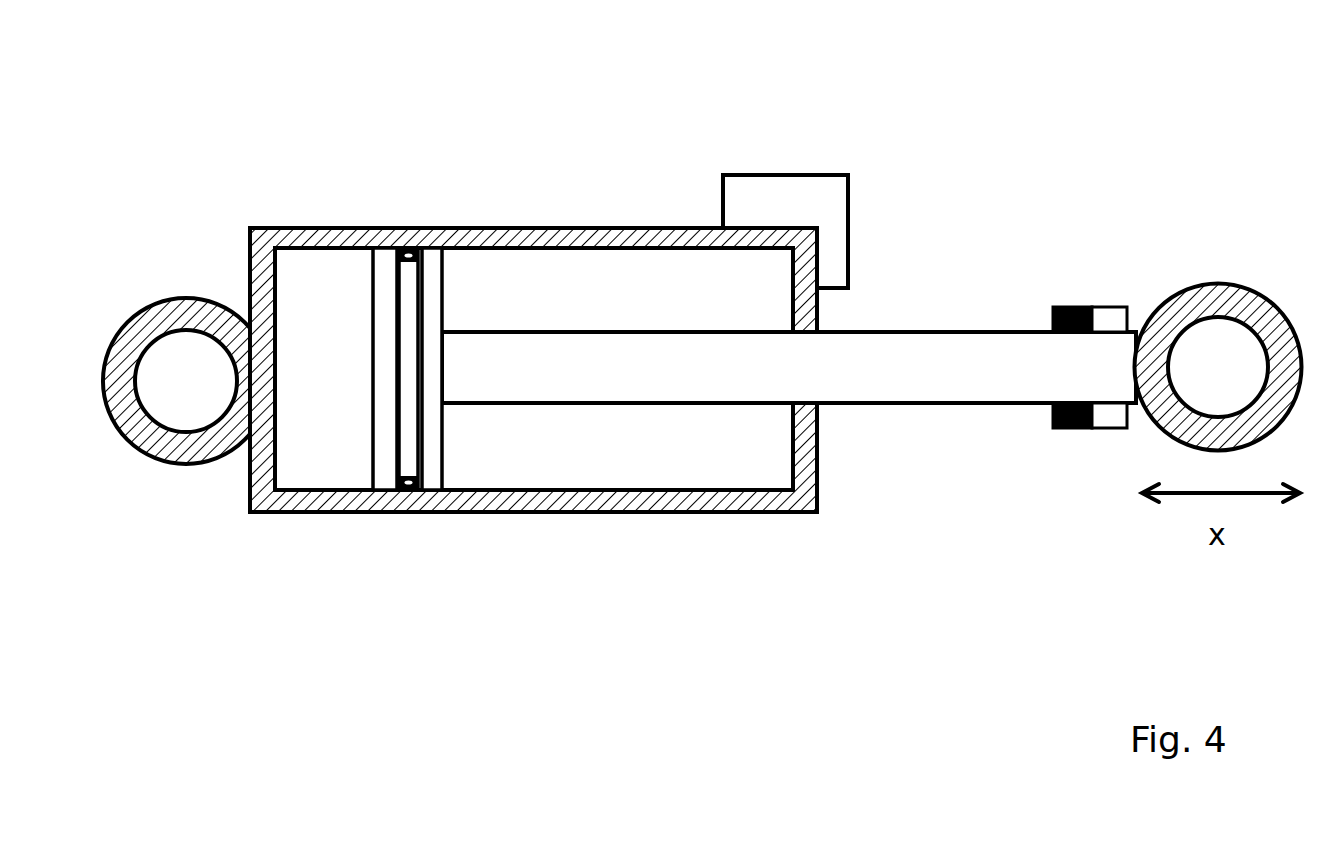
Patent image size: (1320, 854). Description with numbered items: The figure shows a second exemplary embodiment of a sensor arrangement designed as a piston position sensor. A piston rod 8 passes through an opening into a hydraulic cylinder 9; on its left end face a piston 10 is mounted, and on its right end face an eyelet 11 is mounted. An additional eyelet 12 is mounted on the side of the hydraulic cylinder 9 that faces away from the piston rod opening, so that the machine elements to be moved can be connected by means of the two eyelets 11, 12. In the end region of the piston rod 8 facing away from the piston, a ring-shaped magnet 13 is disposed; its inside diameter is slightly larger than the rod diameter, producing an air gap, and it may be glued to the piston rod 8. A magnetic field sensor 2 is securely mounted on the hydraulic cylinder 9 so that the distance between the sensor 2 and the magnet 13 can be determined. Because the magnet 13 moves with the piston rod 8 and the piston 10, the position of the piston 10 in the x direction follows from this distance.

The magnetic field sensor 2 is at (748, 203).
The piston rod 8 is at (773, 403).
The hydraulic cylinder 9 is at (373, 512).
The piston 10 is at (397, 287).
The eyelet 11 is at (1195, 290).
The additional eyelet 12 is at (153, 460).
The ring-shaped magnet 13 is at (1078, 428).